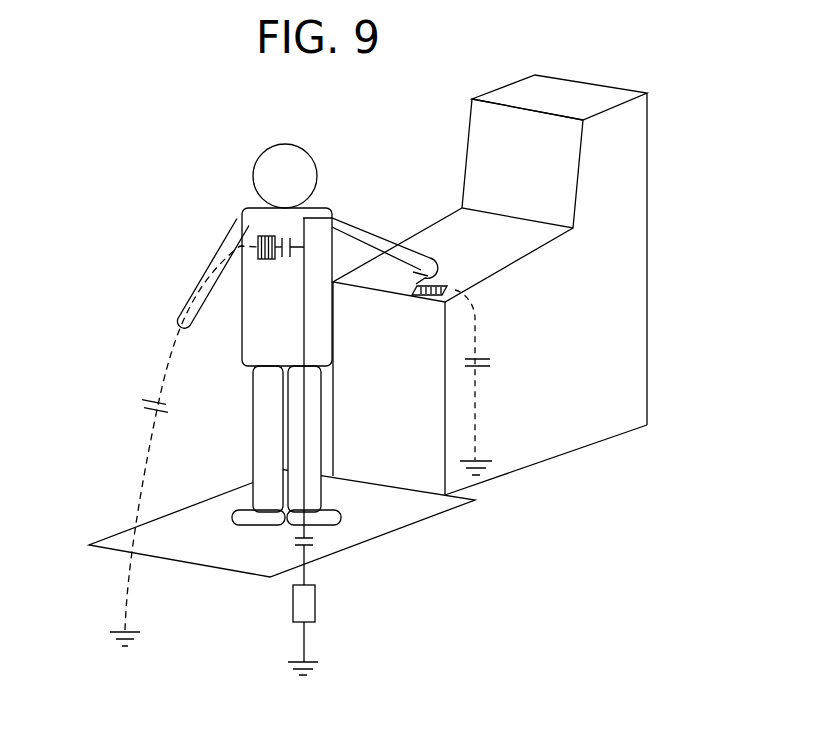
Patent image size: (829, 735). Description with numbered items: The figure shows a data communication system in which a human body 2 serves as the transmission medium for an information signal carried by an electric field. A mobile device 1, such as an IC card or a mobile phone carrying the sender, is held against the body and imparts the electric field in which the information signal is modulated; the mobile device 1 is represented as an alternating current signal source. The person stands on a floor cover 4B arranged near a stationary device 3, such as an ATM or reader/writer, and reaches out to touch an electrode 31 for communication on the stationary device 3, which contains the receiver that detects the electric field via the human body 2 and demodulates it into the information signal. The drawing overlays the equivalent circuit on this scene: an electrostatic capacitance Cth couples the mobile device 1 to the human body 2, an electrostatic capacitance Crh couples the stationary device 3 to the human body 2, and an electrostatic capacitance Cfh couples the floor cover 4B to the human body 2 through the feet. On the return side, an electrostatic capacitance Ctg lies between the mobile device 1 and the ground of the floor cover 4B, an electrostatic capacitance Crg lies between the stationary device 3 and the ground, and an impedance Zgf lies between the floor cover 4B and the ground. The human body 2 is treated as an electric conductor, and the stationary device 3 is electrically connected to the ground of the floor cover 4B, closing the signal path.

The mobile device 1 is at (258, 236).
The human body 2 is at (252, 348).
The stationary device 3 is at (630, 228).
The electrode for a communication 31 is at (458, 292).
The floor cover 4B is at (500, 505).
The electrostatic capacitance between the mobile device and the human body Cth is at (252, 208).
The electrostatic capacitance between the mobile device and the ground Ctg is at (121, 404).
The electrostatic capacitance between the stationary device and the human body Crh is at (453, 250).
The electrostatic capacitance between the stationary device and the ground Crg is at (504, 363).
The electrostatic capacitance between the floor cover electrode and the human body Cfh is at (333, 549).
The impedance between the floor cover electrode and the ground Zgf is at (348, 612).